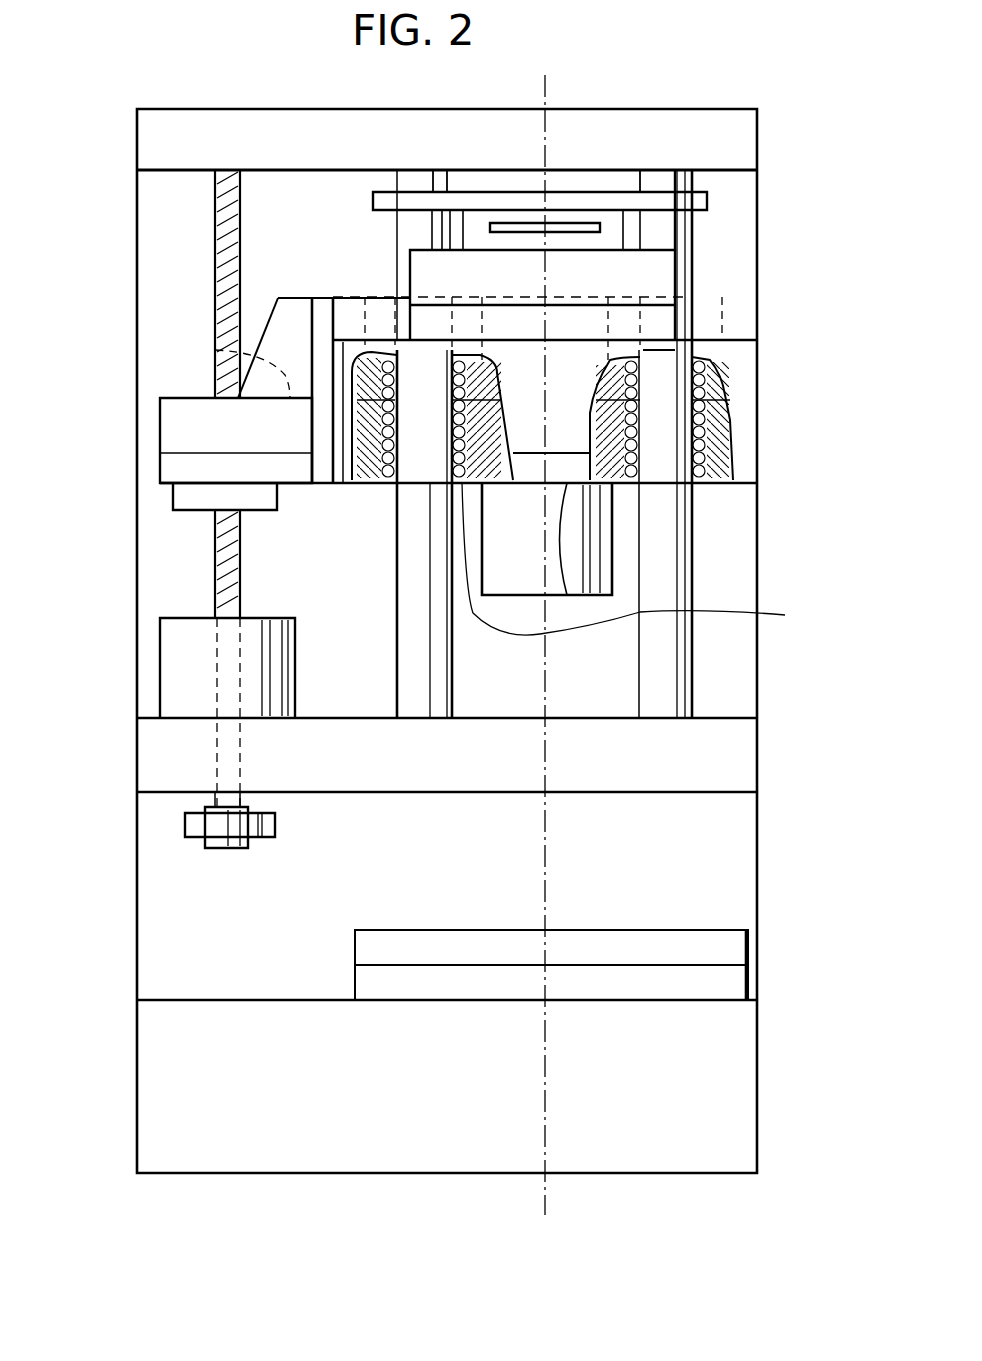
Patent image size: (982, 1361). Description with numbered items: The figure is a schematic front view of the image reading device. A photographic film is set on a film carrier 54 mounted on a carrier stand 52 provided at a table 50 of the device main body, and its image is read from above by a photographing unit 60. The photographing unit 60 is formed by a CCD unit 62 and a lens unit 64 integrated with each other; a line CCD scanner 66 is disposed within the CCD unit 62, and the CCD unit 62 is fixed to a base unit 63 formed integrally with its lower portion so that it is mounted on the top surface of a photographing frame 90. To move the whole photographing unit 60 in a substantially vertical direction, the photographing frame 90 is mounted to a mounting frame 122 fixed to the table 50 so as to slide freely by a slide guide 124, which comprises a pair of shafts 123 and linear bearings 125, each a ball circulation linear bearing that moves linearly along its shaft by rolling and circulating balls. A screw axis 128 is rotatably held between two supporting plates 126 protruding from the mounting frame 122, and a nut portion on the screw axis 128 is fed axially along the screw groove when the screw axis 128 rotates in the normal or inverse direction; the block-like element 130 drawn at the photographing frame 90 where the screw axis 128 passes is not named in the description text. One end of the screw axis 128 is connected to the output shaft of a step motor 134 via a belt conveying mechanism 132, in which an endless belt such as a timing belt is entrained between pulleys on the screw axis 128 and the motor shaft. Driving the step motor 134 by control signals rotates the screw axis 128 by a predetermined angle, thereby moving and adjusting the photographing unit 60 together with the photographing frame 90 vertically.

The table 50 is at (663, 1127).
The carrier stand 52 is at (730, 982).
The film carrier 54 is at (720, 943).
The photographing unit 60 is at (609, 382).
The CCD unit 62 is at (660, 287).
The base unit 63 is at (733, 338).
The lens unit 64 is at (650, 515).
The line CCD scanner 66 is at (598, 228).
The photographing frame 90 is at (215, 350).
The mounting frame 122 is at (727, 597).
The shafts 123 is at (423, 677).
The slide guide 124 is at (651, 534).
The linear bearings 125 is at (651, 560).
The supporting plates 126 is at (682, 132).
The screw axis 128 is at (215, 568).
The carriage block 130 is at (193, 498).
The belt conveying mechanism 132 is at (193, 827).
The step motor 134 is at (178, 660).